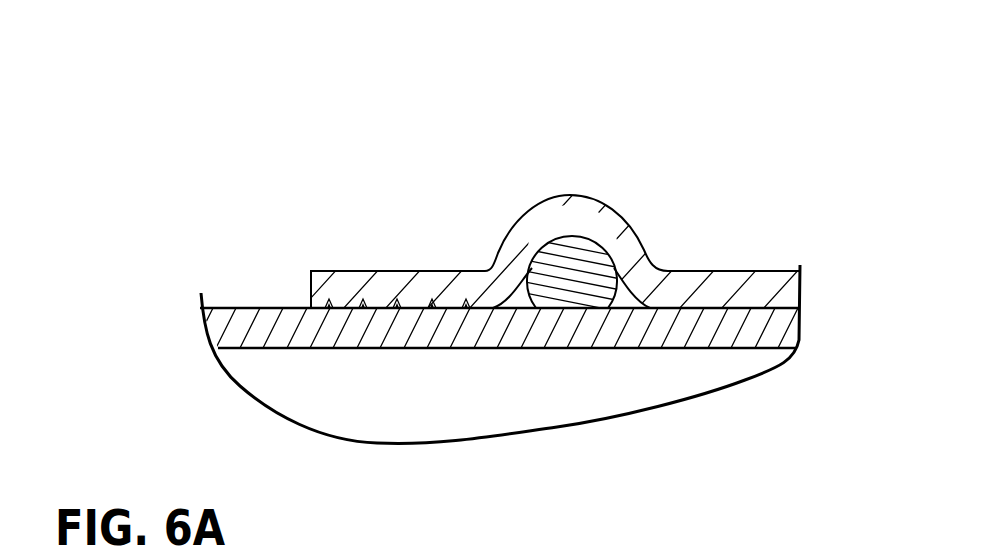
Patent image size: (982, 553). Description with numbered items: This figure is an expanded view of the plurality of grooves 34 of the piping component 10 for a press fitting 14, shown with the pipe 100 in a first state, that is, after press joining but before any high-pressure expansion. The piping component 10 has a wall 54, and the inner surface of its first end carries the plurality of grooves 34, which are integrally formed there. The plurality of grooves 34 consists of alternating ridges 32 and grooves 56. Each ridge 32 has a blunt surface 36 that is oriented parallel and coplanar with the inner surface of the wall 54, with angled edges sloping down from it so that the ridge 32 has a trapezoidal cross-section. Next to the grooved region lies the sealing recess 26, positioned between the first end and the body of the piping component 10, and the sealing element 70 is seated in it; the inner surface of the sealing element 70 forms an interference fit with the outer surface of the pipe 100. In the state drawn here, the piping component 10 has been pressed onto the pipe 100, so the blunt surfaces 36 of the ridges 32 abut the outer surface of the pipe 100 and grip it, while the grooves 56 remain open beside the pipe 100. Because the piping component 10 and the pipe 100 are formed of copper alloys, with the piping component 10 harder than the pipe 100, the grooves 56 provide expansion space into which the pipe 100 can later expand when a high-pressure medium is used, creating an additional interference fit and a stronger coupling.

The piping component 10 is at (651, 275).
The press fitting 14 is at (549, 114).
The sealing recess 26 is at (560, 212).
The ridge 32 is at (348, 302).
The plurality of grooves 34 is at (373, 252).
The blunt surface 36 is at (384, 307).
The wall 54 is at (580, 217).
The groove 56 is at (436, 292).
The sealing element 70 is at (567, 270).
The pipe 100 is at (697, 323).